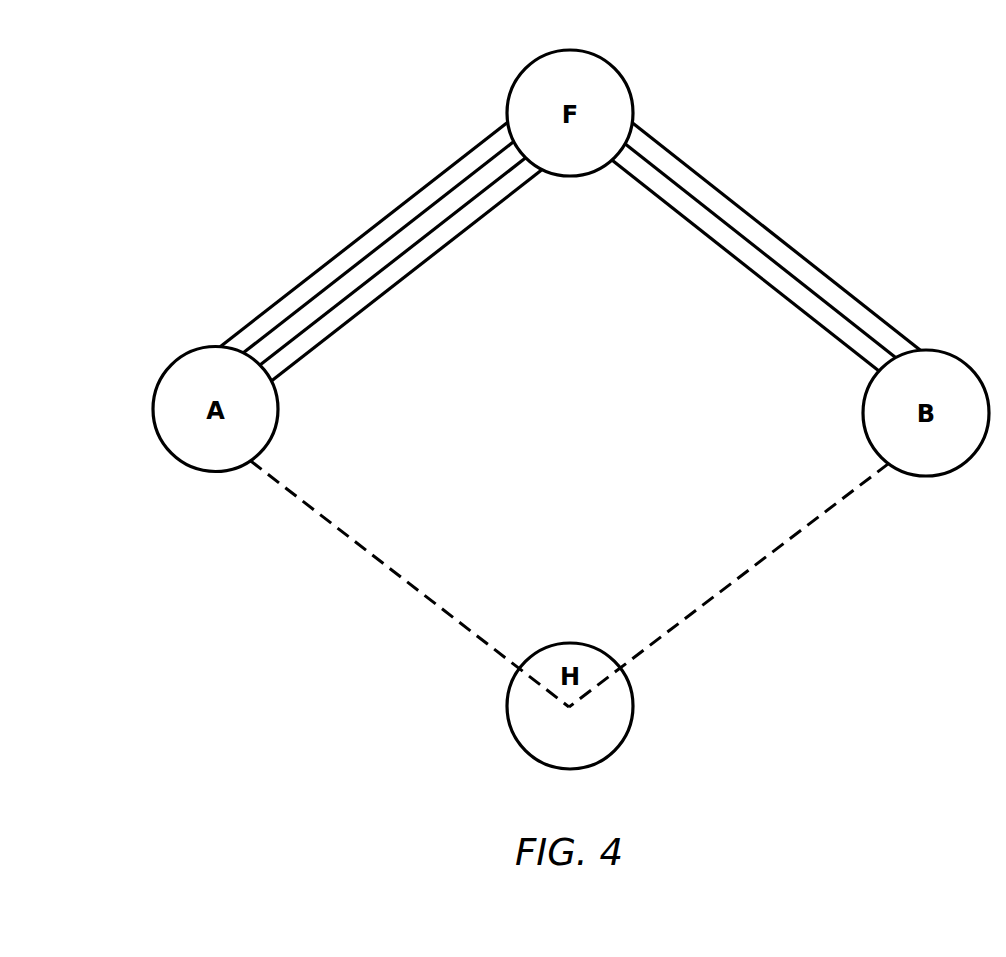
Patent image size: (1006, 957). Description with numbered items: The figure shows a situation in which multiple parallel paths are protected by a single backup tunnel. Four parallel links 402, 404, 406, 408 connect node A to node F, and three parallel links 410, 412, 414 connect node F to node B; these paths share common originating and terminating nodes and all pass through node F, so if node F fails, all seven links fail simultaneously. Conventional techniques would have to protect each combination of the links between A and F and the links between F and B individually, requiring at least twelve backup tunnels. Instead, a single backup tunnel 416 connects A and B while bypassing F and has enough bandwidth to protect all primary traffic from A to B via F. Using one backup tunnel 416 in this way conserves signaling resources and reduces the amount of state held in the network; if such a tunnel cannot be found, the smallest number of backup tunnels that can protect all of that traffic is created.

The parallel link 402 is at (364, 234).
The parallel link 404 is at (378, 247).
The parallel link 406 is at (393, 261).
The parallel link 408 is at (406, 263).
The parallel link 410 is at (776, 237).
The parallel link 412 is at (760, 251).
The parallel link 414 is at (745, 249).
The single backup tunnel 416 is at (570, 584).